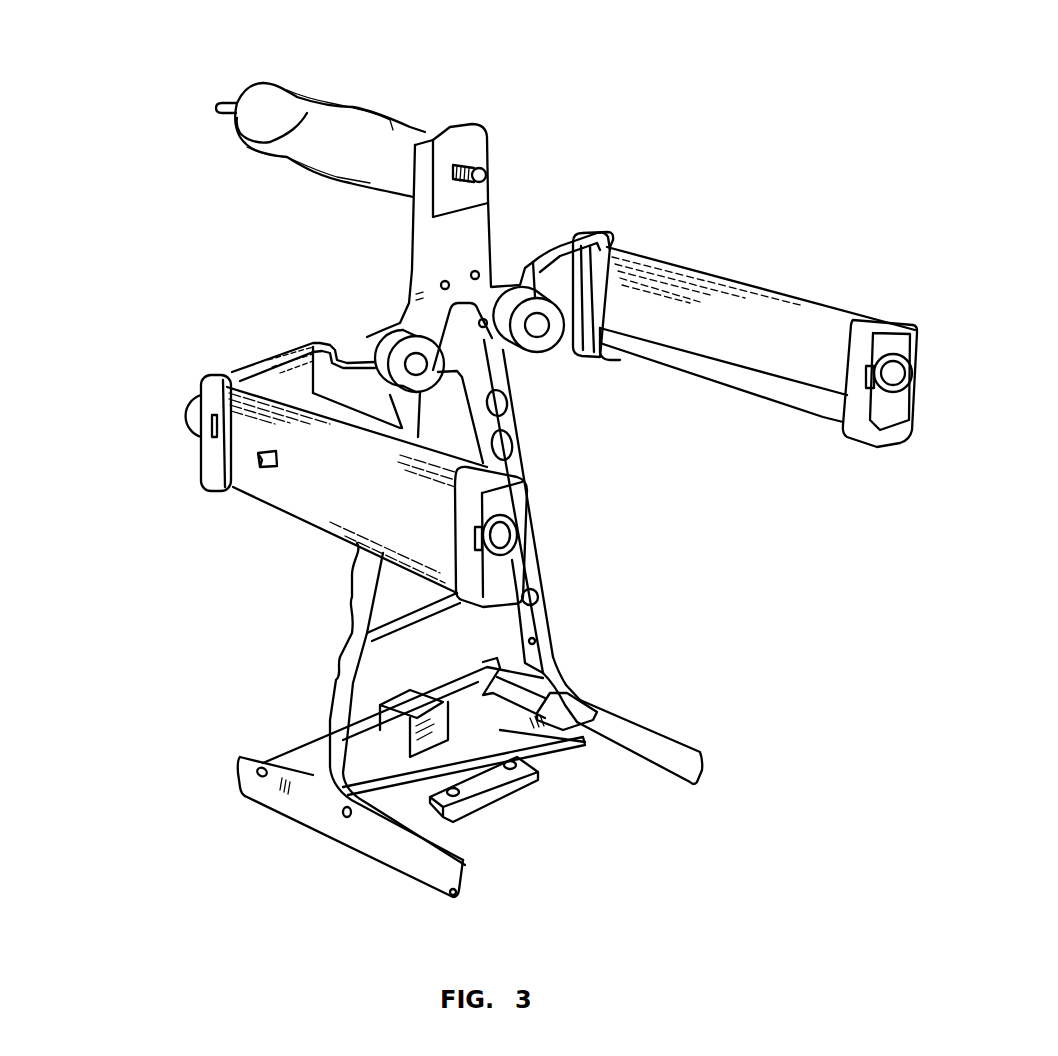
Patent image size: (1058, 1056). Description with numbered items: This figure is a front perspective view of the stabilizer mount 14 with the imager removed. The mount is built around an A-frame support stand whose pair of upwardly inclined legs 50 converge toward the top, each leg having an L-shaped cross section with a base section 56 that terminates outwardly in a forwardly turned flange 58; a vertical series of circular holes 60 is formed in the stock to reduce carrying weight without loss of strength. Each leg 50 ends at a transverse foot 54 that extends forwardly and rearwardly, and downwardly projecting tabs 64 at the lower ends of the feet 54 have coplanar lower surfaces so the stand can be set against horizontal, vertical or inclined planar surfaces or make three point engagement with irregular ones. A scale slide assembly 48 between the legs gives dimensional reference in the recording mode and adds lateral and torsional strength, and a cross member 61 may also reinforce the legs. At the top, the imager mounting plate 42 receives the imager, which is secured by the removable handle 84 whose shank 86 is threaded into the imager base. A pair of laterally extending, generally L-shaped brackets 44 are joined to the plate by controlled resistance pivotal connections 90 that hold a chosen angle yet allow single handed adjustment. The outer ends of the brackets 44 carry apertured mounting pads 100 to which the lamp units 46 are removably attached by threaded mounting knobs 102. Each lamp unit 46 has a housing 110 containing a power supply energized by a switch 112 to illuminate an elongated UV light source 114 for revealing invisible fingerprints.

The stabilizer mount 14 is at (449, 635).
The imager mounting plate 42 is at (423, 245).
The pivotal brackets 44 is at (273, 357).
The lamp units 46 is at (490, 381).
The scale slide assembly 48 is at (510, 800).
The legs 50 is at (328, 703).
The foot 54 is at (330, 830).
The base section 56 is at (527, 623).
The flange 58 is at (552, 657).
The circular holes 60 is at (538, 597).
The cross member 61 is at (405, 608).
The tabs 64 is at (450, 893).
The handle 84 is at (237, 103).
The shank 86 is at (472, 168).
The pivotal connections 90 is at (383, 322).
The mounting pads 100 is at (203, 380).
The mounting knobs 102 is at (190, 418).
The housing 110 is at (790, 295).
The switch 112 is at (258, 456).
The UV light source 114 is at (707, 380).